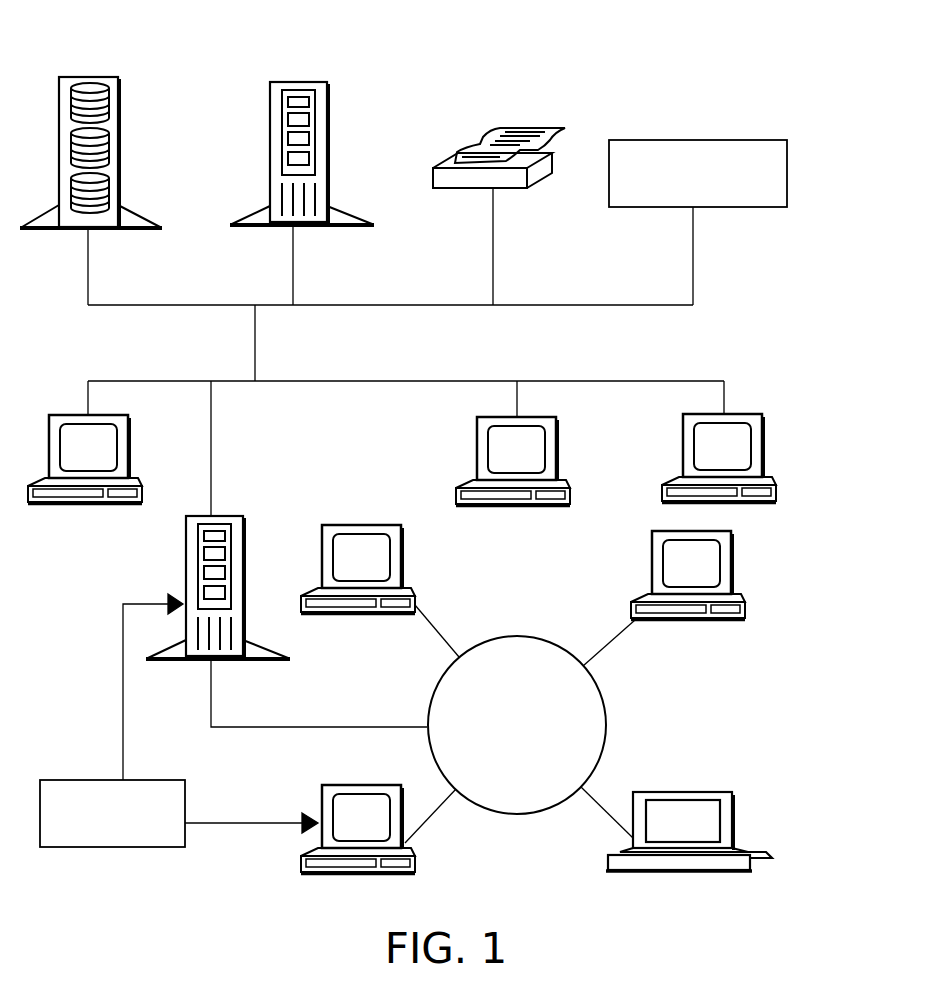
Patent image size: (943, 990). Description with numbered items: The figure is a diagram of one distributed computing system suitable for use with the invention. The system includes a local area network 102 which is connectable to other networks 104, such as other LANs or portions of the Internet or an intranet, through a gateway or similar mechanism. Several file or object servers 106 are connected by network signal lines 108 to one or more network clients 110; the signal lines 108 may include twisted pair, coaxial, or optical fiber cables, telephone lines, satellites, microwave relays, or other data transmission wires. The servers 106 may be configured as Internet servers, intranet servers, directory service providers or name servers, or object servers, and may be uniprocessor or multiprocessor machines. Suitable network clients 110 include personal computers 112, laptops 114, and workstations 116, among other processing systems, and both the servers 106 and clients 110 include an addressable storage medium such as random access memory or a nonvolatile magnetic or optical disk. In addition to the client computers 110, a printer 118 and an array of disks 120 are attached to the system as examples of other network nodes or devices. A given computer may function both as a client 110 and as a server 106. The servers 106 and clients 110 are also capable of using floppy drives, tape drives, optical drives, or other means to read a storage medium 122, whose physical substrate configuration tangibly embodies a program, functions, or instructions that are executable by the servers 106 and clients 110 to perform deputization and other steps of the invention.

The local area network 102 is at (650, 381).
The other networks 104 is at (678, 140).
The file or object server 106 is at (293, 82).
The network signal line 108 is at (211, 443).
The network client 110 is at (672, 622).
The personal computer 112 is at (400, 559).
The laptop 114 is at (655, 792).
The workstation 116 is at (740, 412).
The printer 118 is at (510, 128).
The array of disks 120 is at (88, 77).
The storage medium 122 is at (185, 800).